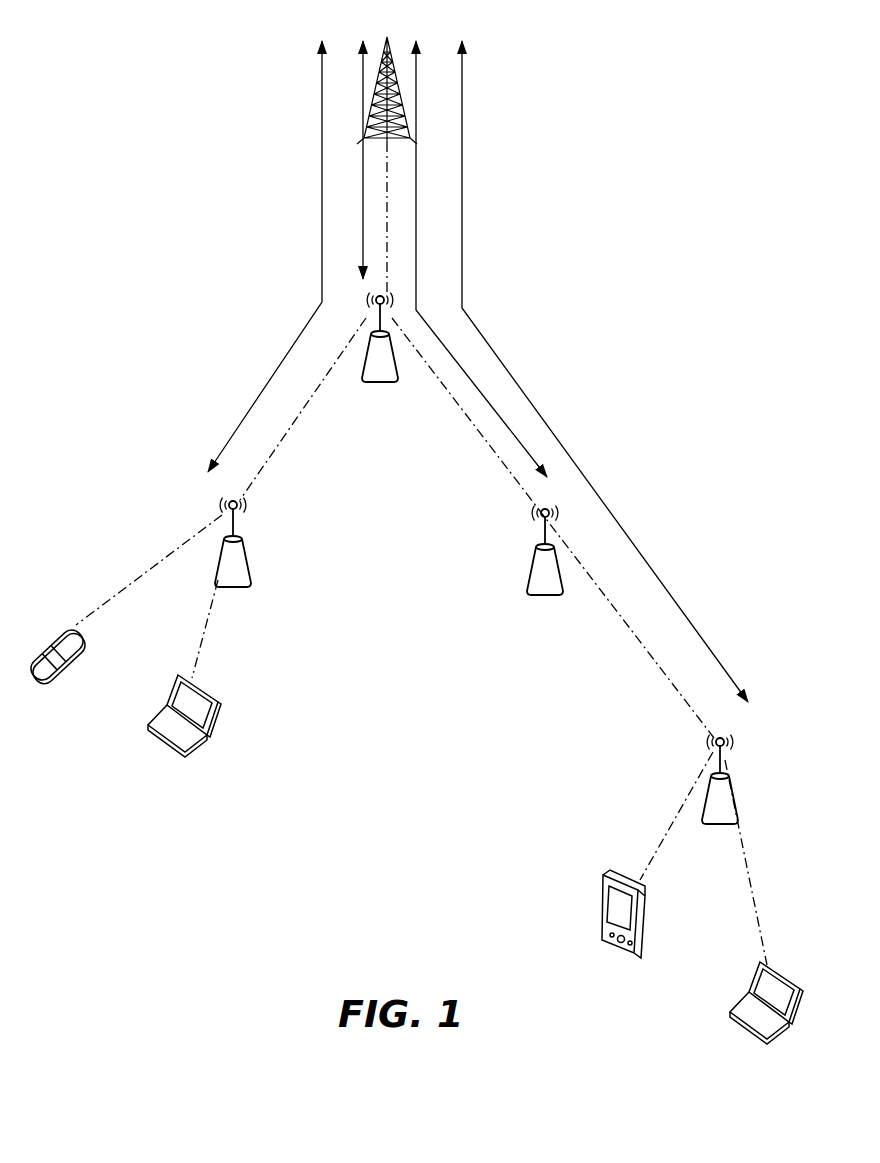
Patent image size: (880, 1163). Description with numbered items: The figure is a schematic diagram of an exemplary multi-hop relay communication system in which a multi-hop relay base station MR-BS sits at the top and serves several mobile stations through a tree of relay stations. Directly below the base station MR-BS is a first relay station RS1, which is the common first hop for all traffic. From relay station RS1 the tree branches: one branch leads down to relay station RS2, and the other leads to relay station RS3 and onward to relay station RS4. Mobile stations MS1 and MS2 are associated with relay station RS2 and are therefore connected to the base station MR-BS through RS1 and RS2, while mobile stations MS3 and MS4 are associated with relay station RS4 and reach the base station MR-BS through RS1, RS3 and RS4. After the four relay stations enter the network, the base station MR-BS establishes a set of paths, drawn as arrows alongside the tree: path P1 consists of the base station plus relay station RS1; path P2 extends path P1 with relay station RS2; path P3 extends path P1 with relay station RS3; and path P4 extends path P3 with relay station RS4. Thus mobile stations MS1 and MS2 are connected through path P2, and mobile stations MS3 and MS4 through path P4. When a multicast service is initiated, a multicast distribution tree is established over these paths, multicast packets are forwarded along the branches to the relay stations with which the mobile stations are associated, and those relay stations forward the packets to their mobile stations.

The multi-hop relay base station MR-BS is at (401, 79).
The path P1 is at (346, 160).
The path P2 is at (265, 256).
The path P3 is at (481, 259).
The path P4 is at (605, 371).
The relay station RS1 is at (407, 333).
The relay station RS2 is at (213, 532).
The relay station RS3 is at (554, 537).
The relay station RS4 is at (741, 771).
The mobile station MS1 is at (58, 644).
The mobile station MS2 is at (209, 716).
The mobile station MS3 is at (602, 907).
The mobile station MS4 is at (768, 992).